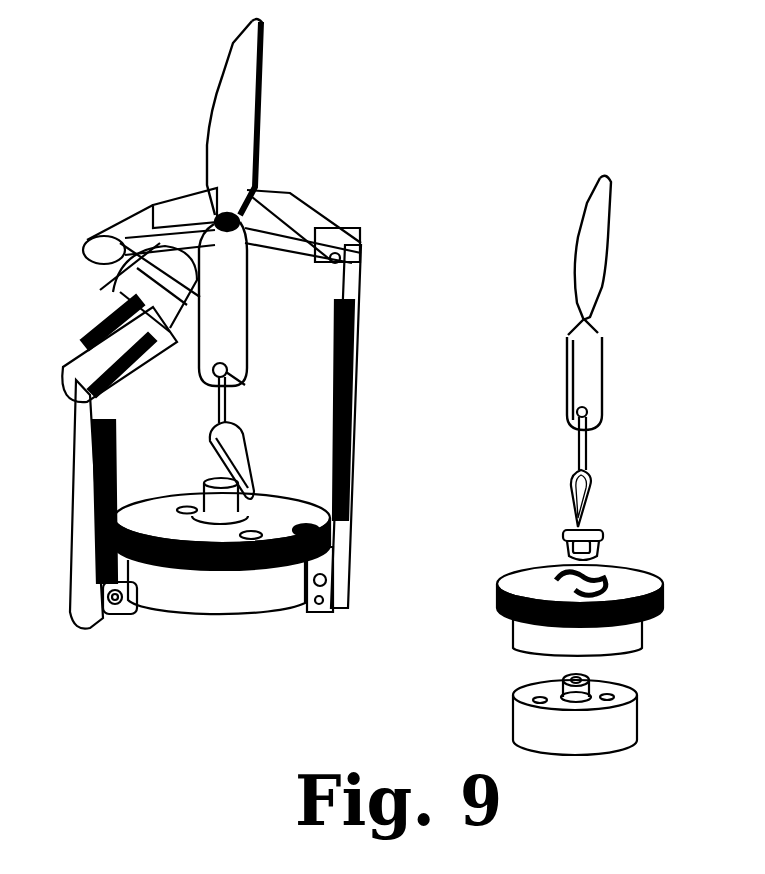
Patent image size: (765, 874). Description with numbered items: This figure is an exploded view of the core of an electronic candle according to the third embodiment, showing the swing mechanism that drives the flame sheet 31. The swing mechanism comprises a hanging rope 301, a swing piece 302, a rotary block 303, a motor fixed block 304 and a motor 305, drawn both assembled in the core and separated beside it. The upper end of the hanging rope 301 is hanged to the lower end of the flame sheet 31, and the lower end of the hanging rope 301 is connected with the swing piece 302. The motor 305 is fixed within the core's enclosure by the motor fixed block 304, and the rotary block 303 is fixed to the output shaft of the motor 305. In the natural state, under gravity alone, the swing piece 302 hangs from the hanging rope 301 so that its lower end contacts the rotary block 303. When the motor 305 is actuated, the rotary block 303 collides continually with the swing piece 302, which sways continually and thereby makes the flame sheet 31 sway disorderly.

The flame sheet 31 is at (238, 338).
The hanging rope 301 is at (238, 407).
The swing piece 302 is at (246, 447).
The rotary block 303 is at (255, 497).
The motor fixed block 304 is at (502, 568).
The motor 305 is at (502, 697).